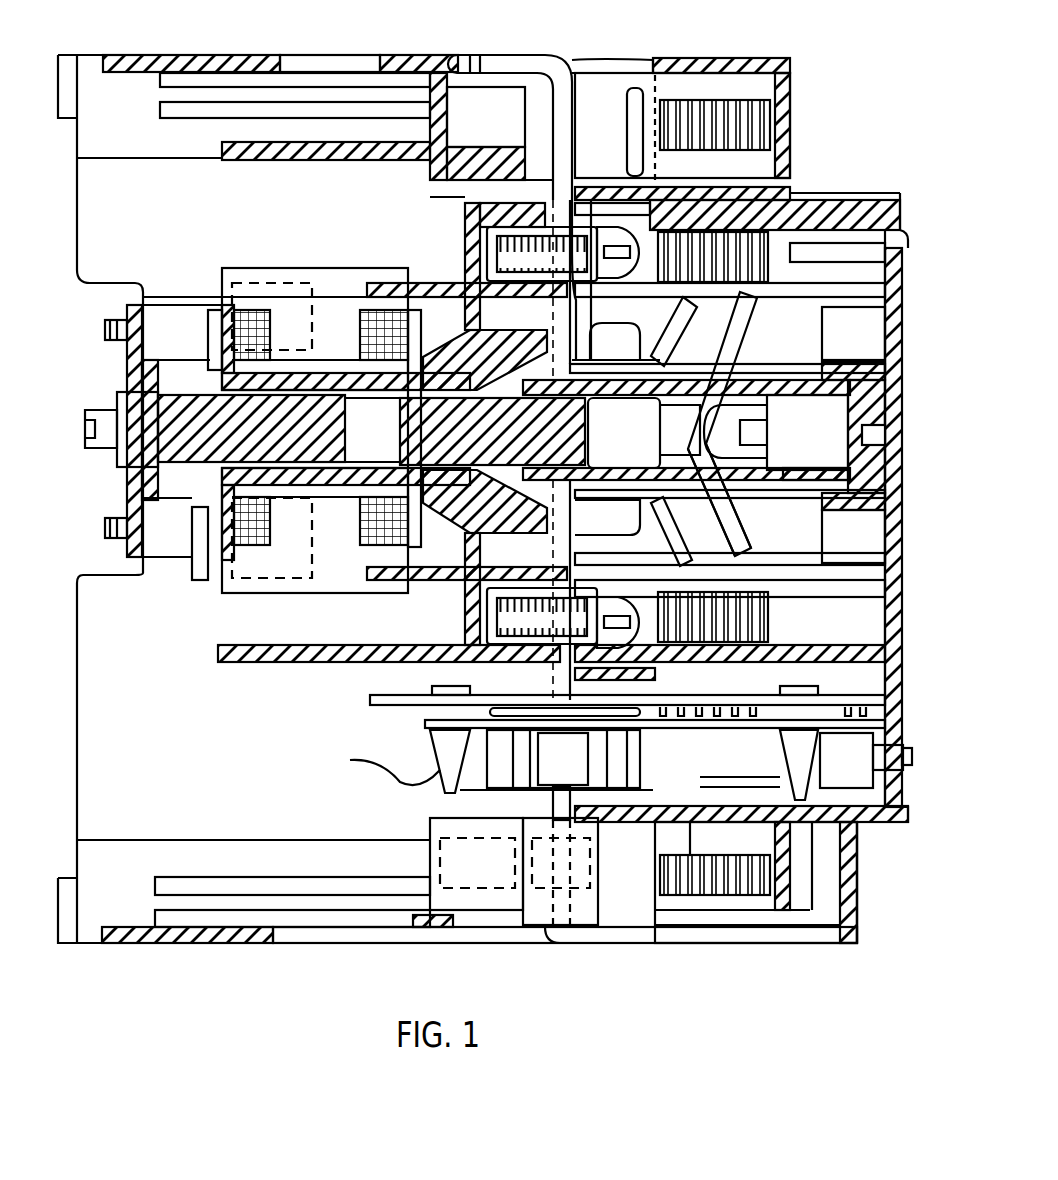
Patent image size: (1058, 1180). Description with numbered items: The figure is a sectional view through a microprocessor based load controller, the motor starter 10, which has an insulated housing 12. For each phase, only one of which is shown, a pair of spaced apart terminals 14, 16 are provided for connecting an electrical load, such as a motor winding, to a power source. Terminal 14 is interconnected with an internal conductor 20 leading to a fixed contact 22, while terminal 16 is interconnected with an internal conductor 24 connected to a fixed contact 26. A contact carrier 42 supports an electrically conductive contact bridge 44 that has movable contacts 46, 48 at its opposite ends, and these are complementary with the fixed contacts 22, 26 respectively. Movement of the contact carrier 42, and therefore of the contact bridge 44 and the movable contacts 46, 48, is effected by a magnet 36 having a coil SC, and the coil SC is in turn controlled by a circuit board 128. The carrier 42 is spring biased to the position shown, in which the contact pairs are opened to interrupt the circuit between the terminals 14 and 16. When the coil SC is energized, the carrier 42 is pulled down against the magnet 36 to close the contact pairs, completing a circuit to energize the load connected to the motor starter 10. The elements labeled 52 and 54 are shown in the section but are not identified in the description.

The motor starter 10 is at (83, 551).
The insulated housing 12 is at (168, 945).
The terminal 14 is at (712, 945).
The terminal 16 is at (700, 88).
The internal conductor 20 is at (548, 945).
The fixed contact 22 is at (673, 541).
The internal conductor 24 is at (578, 207).
The fixed contact 26 is at (672, 343).
The magnet 36 is at (192, 395).
The contact carrier 42 is at (480, 415).
The contact bridge 44 is at (736, 350).
The movable contact 46 is at (730, 544).
The movable contact 48 is at (737, 303).
The plunger 52 is at (840, 404).
The plunger seat 54 is at (862, 456).
The circuit board 128 is at (736, 738).
The coil SC is at (335, 527).